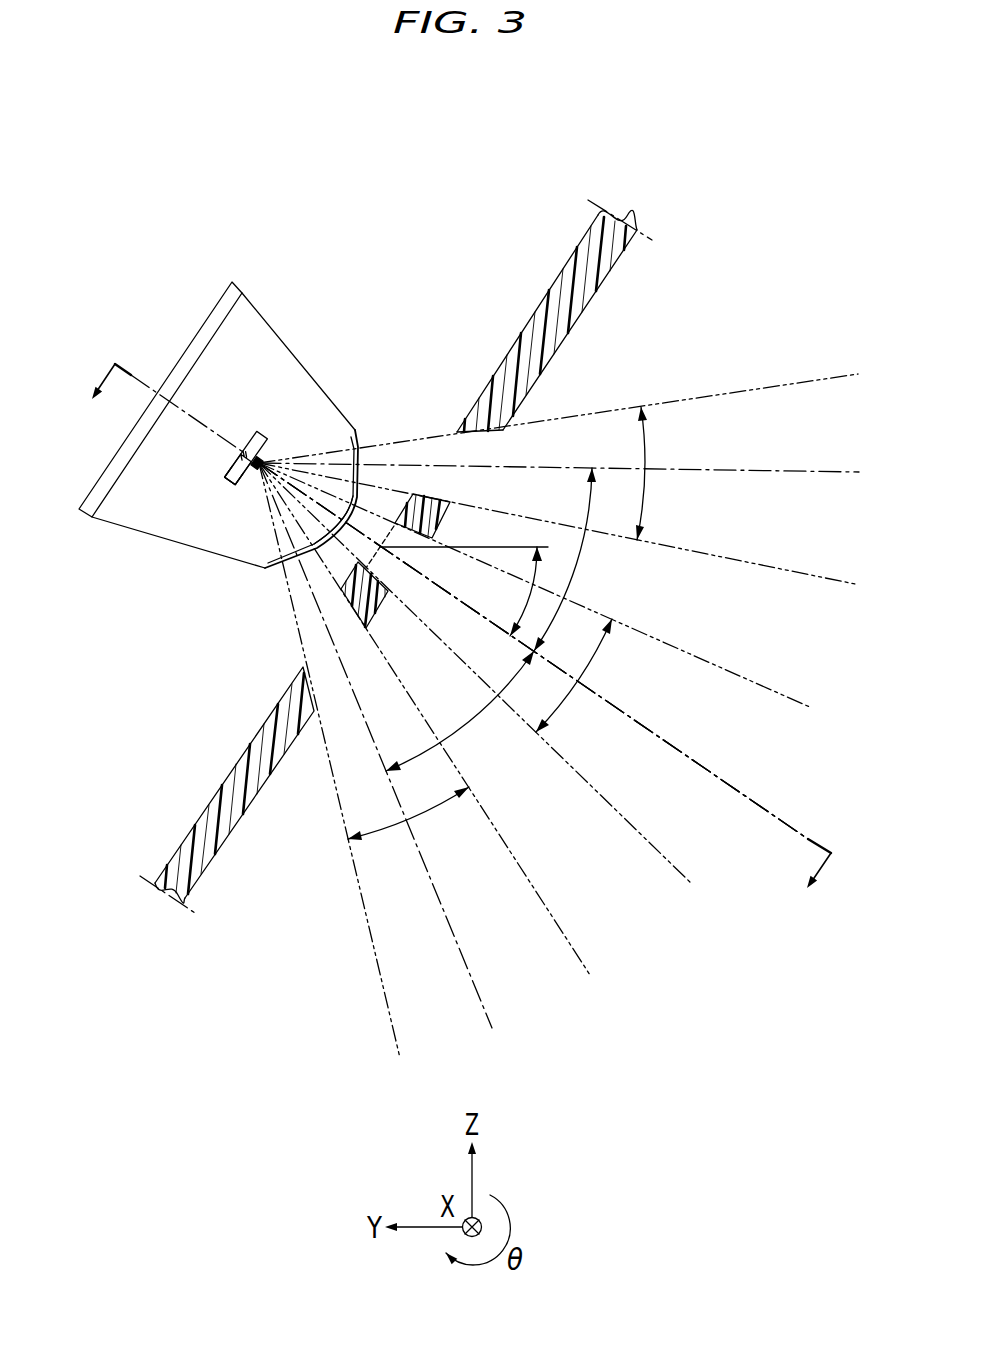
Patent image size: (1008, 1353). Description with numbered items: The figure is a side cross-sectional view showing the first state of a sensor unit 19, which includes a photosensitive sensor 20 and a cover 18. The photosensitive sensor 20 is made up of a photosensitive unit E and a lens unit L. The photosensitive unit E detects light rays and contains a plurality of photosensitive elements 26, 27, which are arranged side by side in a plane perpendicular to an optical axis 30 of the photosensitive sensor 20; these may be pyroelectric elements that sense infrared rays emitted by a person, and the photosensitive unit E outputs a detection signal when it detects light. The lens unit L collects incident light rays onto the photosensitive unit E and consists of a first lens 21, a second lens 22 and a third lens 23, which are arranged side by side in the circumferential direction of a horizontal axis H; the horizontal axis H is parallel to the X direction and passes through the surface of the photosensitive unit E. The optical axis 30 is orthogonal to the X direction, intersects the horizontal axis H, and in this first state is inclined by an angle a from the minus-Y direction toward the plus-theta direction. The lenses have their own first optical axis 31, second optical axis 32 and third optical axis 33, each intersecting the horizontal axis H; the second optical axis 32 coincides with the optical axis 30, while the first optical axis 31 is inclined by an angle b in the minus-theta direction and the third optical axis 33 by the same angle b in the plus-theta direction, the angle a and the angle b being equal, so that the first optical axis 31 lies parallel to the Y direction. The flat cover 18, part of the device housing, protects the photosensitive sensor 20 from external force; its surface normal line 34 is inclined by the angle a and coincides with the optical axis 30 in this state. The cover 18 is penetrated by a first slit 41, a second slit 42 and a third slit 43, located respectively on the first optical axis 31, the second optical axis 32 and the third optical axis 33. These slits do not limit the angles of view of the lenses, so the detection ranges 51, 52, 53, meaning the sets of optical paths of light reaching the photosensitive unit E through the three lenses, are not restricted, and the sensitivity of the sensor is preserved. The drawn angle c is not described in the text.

The cover 18 is at (578, 300).
The sensor unit 19 is at (427, 181).
The photosensitive sensor 20 is at (198, 315).
The first lens 21 is at (357, 466).
The second lens 22 is at (322, 508).
The third lens 23 is at (282, 570).
The photosensitive element 26 is at (255, 443).
The photosensitive element 27 is at (233, 467).
The optical axis 30 is at (631, 718).
The first optical axis 31 is at (716, 468).
The second optical axis 32 is at (705, 768).
The third optical axis 33 is at (433, 884).
The normal line 34 is at (763, 808).
The first slit 41 is at (478, 433).
The second slit 42 is at (380, 577).
The third slit 43 is at (311, 700).
The detection range 51 is at (775, 377).
The detection range 52 is at (778, 690).
The detection range 53 is at (538, 896).
The photosensitive unit E is at (215, 480).
The horizontal axis H is at (257, 467).
The lens unit L is at (327, 518).
The angle a is at (457, 581).
The angle b is at (492, 619).
The angle c is at (505, 625).